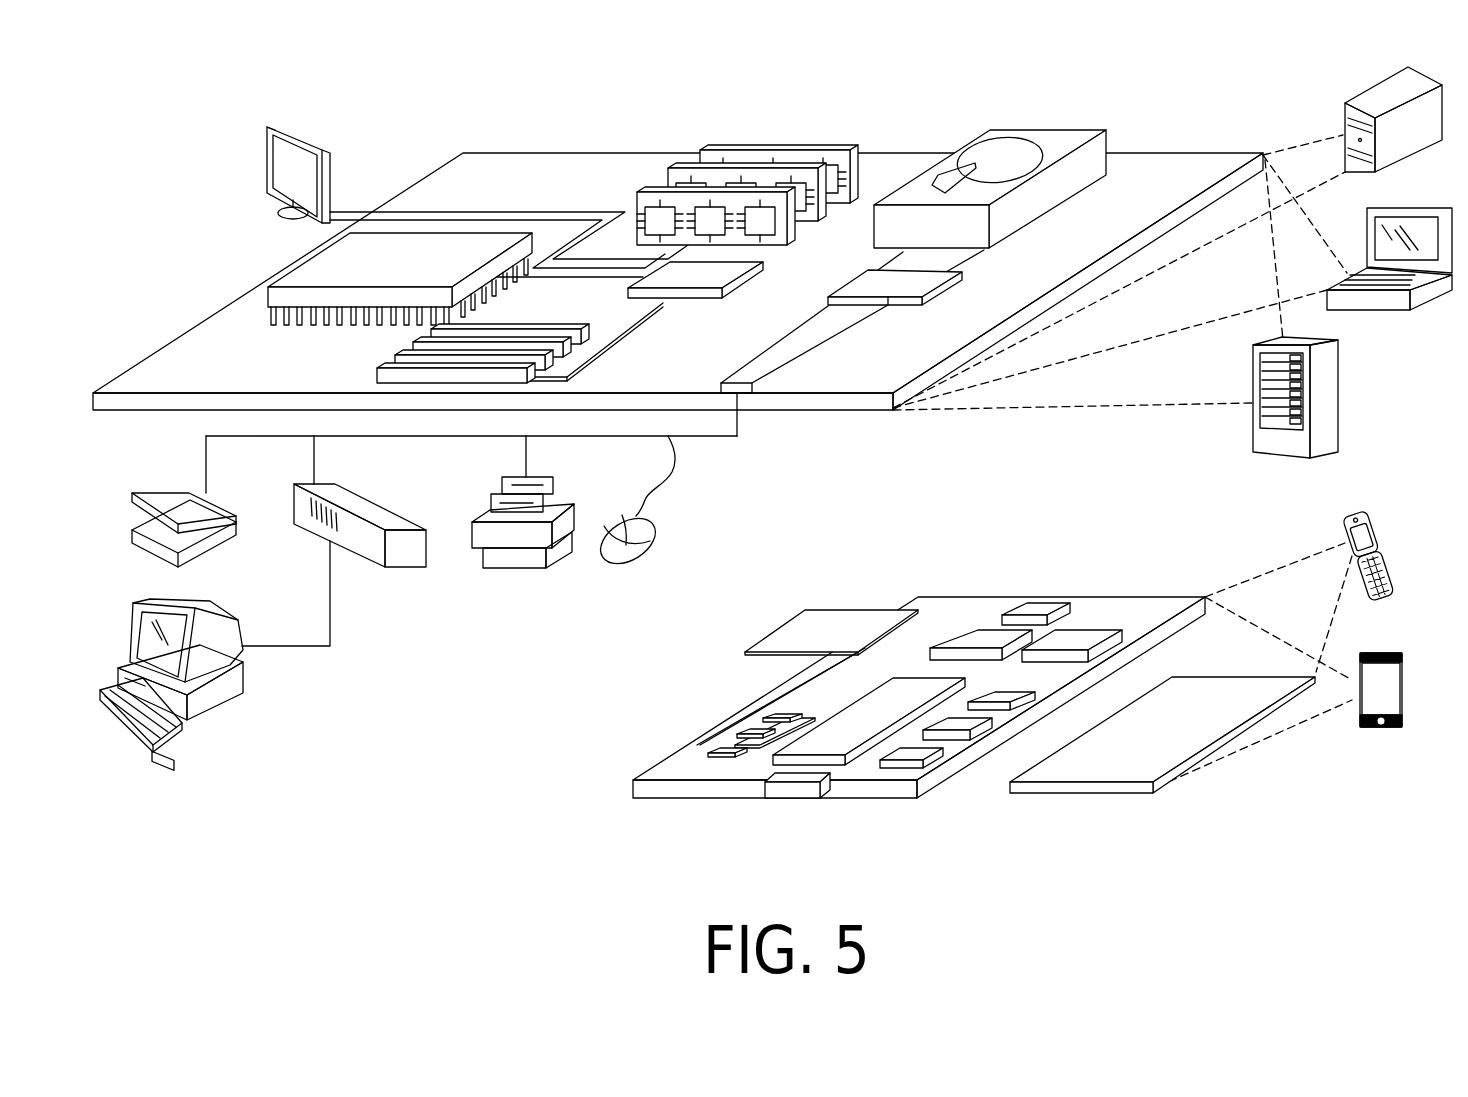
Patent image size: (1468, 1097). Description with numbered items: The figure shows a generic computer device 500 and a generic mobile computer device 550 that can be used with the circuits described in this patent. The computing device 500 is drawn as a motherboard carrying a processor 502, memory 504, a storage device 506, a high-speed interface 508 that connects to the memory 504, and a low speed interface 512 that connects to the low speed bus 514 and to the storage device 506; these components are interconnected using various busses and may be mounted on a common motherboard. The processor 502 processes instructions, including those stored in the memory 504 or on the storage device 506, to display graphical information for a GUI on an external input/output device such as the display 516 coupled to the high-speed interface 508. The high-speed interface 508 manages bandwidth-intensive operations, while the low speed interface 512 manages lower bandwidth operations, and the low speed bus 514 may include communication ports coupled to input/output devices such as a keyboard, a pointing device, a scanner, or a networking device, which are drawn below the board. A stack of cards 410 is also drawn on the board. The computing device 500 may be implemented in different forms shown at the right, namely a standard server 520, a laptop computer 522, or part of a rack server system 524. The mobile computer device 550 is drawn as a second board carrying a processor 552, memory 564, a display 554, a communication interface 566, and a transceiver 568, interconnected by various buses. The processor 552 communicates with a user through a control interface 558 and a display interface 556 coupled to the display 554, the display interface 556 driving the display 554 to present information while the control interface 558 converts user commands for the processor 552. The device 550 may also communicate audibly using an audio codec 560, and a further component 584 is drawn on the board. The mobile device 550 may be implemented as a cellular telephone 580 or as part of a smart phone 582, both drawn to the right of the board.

The computing device 500 is at (407, 95).
The processor 502 is at (295, 269).
The memory 504 is at (787, 148).
The storage device 506 is at (1037, 127).
The high-speed interface 508 is at (710, 272).
The low speed interface 512 is at (867, 278).
The low speed bus 514 is at (743, 377).
The display 516 is at (272, 120).
The standard server 520 is at (1368, 97).
The laptop computer 522 is at (1427, 207).
The rack server system 524 is at (1343, 397).
The expansion cards 410 is at (410, 353).
The mobile computer device 550 is at (1251, 797).
The processor 552 is at (837, 727).
The display 554 is at (1203, 693).
The display interface 556 is at (918, 752).
The control interface 558 is at (962, 725).
The audio codec 560 is at (1005, 690).
The memory 564 is at (745, 733).
The communication interface 566 is at (980, 633).
The transceiver 568 is at (1080, 637).
The cellular telephone 580 is at (1037, 607).
The smart phone 582 is at (1373, 653).
The battery 584 is at (808, 608).